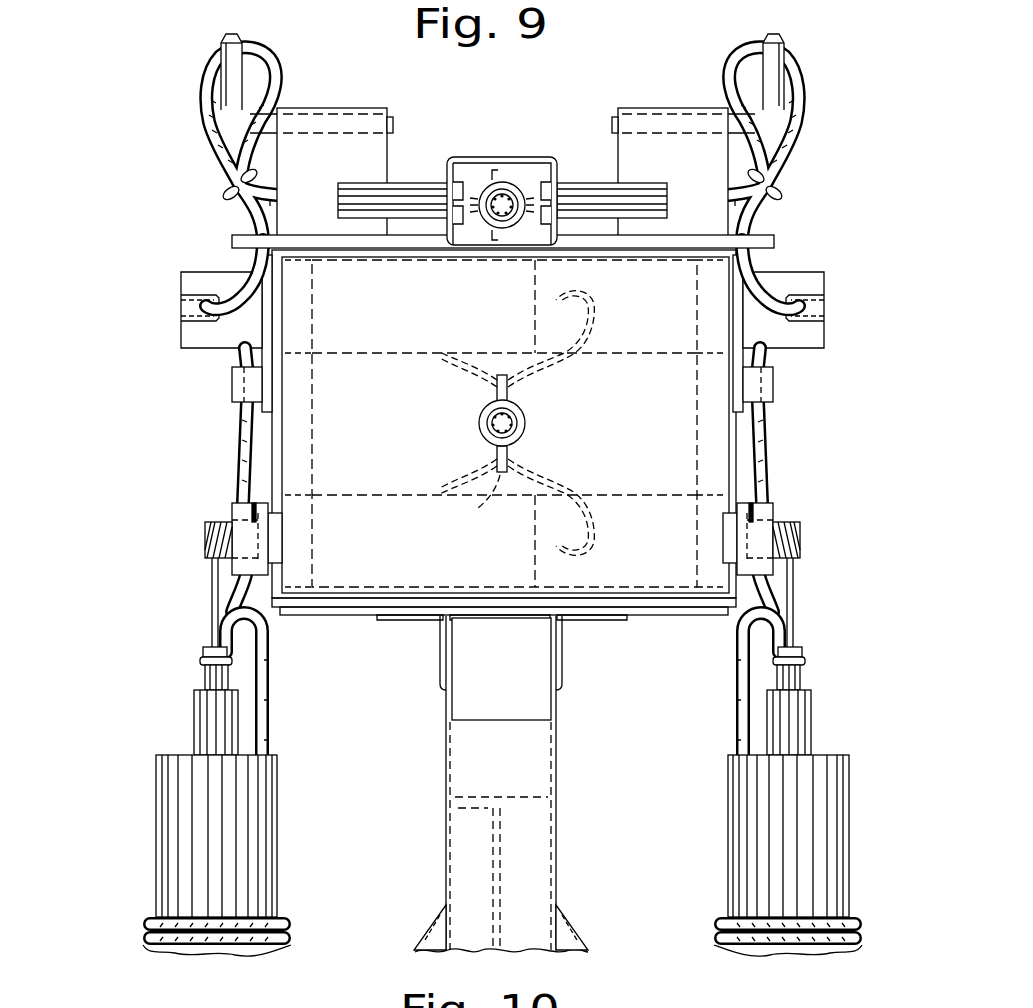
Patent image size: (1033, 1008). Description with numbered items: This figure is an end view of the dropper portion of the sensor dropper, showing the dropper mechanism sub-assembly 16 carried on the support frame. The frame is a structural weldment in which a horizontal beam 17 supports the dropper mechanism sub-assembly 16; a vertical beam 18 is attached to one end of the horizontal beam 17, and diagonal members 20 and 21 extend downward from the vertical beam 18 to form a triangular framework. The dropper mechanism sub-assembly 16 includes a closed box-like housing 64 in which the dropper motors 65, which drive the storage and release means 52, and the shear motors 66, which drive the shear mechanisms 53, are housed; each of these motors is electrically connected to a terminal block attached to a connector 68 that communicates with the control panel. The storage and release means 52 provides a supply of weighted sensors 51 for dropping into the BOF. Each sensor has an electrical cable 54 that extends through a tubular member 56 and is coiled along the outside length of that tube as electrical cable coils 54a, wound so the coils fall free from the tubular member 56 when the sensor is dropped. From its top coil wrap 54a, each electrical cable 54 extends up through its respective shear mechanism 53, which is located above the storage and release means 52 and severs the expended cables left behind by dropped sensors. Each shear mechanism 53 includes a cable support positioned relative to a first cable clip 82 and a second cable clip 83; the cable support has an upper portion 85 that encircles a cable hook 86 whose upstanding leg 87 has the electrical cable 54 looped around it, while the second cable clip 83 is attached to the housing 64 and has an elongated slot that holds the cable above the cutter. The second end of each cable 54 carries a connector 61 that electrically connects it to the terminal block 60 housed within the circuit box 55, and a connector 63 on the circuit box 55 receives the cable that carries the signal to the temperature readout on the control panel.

The dropper mechanism sub-assembly 16 is at (156, 159).
The horizontal beam 17 is at (472, 674).
The vertical beam 18 is at (540, 858).
The diagonal member 20 is at (578, 935).
The diagonal member 21 is at (428, 935).
The weighted sensor 51 is at (176, 732).
The storage and release means 52 is at (210, 535).
The shear mechanism 53 is at (162, 300).
The electrical cable 54 is at (262, 70).
The electrical cable coils 54a is at (192, 944).
The circuit box 55 is at (481, 156).
The tubular member 56 is at (180, 798).
The terminal block 60 is at (510, 168).
The connector 61 is at (390, 196).
The connector 63 is at (492, 222).
The housing 64 is at (357, 592).
The dropper motor 65 is at (394, 502).
The shear motor 66 is at (375, 350).
The connector 68 is at (518, 420).
The first cable clip 82 is at (230, 385).
The second cable clip 83 is at (232, 240).
The upper portion 85 is at (312, 108).
The cable hook 86 is at (393, 125).
The upstanding leg 87 is at (226, 60).